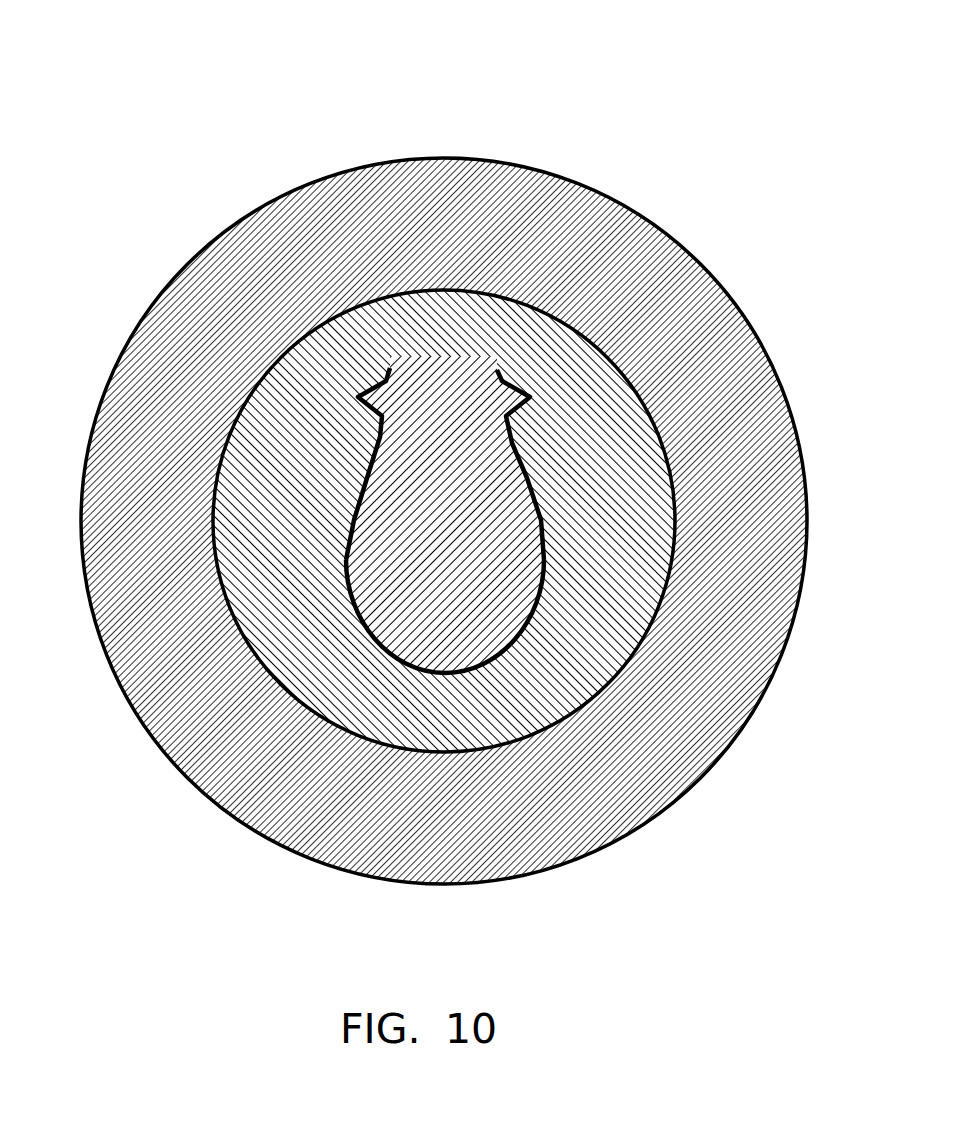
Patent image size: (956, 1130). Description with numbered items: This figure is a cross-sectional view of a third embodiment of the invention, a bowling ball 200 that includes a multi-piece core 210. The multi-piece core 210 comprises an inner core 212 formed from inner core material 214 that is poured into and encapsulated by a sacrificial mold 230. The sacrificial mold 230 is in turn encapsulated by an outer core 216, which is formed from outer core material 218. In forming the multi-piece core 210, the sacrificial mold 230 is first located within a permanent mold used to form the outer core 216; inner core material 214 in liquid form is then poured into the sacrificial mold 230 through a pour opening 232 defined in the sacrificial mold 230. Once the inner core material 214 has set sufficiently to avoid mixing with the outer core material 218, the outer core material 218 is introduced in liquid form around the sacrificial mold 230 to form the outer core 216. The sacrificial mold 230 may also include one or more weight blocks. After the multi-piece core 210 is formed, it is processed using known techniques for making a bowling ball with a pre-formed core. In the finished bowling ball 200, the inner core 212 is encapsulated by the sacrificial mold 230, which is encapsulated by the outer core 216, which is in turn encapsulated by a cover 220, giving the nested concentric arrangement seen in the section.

The bowling ball 200 is at (448, 446).
The multi-piece core 210 is at (334, 307).
The inner core 212 is at (513, 437).
The inner core material 214 is at (638, 657).
The outer core 216 is at (286, 374).
The outer core material 218 is at (262, 636).
The cover 220 is at (412, 159).
The sacrificial mold 230 is at (520, 653).
The pour opening 232 is at (455, 367).